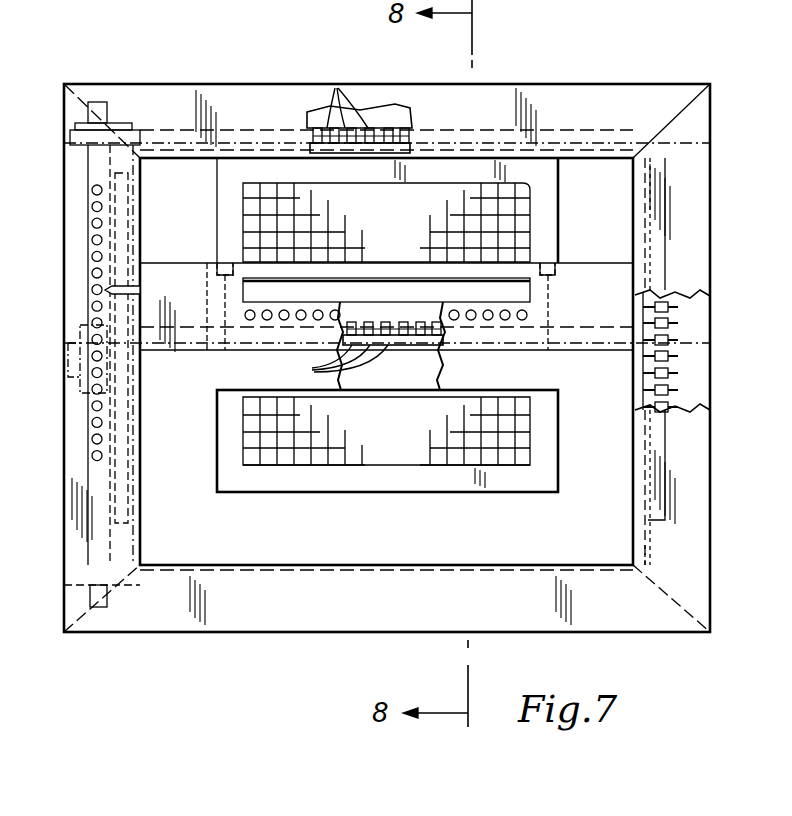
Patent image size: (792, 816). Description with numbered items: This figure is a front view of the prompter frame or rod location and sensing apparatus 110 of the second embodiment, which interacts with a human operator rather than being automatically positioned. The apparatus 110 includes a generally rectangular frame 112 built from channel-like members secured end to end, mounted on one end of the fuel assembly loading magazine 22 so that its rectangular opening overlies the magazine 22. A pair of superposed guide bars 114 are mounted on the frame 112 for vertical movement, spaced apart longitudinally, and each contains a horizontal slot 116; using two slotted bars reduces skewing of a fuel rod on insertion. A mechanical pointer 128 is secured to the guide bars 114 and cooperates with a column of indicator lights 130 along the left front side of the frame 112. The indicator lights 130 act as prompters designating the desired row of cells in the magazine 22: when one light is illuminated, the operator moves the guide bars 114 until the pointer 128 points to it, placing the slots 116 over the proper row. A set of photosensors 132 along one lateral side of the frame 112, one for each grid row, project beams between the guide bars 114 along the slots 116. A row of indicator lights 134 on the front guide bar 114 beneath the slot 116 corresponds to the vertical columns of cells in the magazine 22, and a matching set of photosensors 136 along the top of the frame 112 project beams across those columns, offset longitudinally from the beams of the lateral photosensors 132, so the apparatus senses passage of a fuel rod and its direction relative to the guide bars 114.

The rod location and sensing apparatus 110 is at (612, 80).
The frame 112 is at (540, 93).
The guide bars 114 is at (620, 280).
The horizontal slot 116 is at (500, 290).
The mechanical pointer 128 is at (122, 290).
The indicator lights 130 is at (92, 456).
The photosensors 132 is at (680, 368).
The indicator lights 134 is at (312, 369).
The photosensors 136 is at (336, 88).
The fuel assembly loading magazine 22 is at (513, 495).